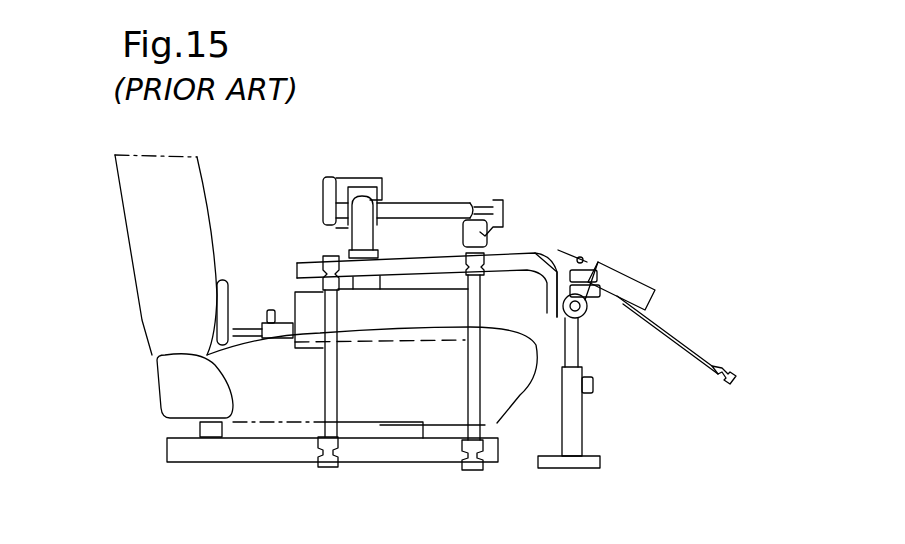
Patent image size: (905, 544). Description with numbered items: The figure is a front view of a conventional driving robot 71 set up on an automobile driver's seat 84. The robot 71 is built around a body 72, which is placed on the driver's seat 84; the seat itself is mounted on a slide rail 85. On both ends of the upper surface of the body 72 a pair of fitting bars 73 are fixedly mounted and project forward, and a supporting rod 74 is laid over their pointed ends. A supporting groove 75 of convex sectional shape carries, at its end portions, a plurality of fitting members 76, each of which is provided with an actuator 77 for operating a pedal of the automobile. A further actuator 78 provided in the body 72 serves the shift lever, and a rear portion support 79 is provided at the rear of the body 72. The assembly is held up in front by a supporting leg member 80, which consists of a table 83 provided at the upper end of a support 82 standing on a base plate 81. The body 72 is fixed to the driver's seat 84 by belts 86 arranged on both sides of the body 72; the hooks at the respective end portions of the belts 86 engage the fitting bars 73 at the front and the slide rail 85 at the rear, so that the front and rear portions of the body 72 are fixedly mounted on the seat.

The robot 71 is at (515, 233).
The body 72 is at (296, 304).
The fitting bars 73 is at (536, 248).
The supporting rod 74 is at (583, 320).
The supporting groove 75 is at (640, 281).
The fitting members 76 is at (598, 258).
The actuator 77 is at (667, 330).
The actuator for shift lever 78 is at (410, 208).
The rear portion support 79 is at (233, 333).
The supporting leg member 80 is at (587, 423).
The base plate 81 is at (591, 467).
The support 82 is at (562, 422).
The table 83 is at (575, 328).
The driver's seat 84 is at (232, 378).
The slide rail 85 is at (213, 452).
The belts 86 is at (330, 393).